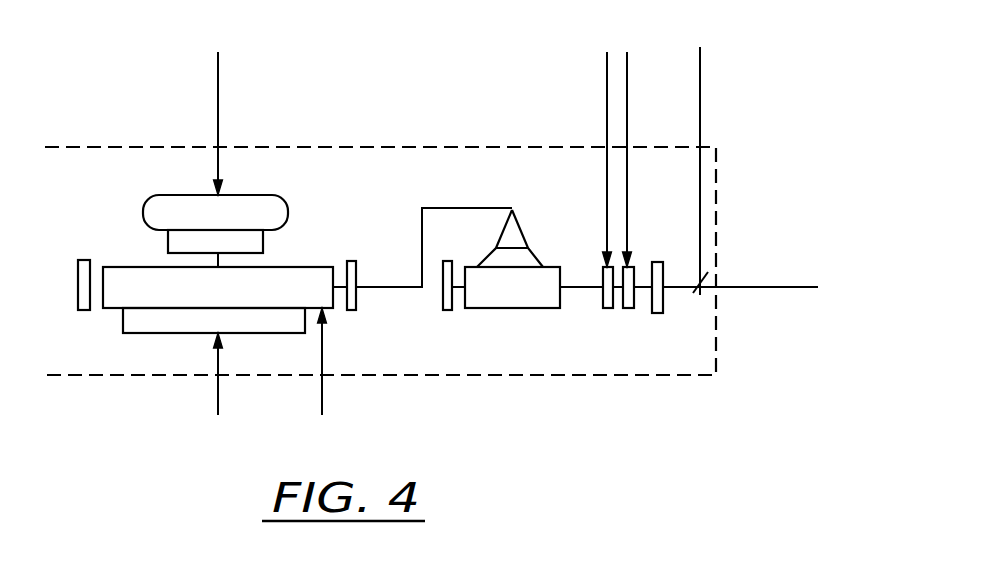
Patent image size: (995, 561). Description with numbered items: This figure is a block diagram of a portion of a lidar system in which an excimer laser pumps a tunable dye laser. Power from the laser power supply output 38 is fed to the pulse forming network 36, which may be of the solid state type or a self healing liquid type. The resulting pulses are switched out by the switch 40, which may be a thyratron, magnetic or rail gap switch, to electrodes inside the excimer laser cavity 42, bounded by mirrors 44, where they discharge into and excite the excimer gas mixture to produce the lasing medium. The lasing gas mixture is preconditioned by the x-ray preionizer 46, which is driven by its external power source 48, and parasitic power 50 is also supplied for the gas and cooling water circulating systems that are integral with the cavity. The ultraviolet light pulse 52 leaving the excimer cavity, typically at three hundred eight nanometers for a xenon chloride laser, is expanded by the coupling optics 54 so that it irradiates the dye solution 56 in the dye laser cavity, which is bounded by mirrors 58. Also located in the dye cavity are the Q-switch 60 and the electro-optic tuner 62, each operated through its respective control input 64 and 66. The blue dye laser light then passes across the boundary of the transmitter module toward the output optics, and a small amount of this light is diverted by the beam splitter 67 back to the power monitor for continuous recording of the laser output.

The pulse forming network 36 is at (232, 222).
The laser power supply output 38 is at (217, 110).
The switch 40 is at (263, 247).
The excimer laser cavity 42 is at (222, 300).
The mirrors 44 is at (78, 283).
The x-ray preionizer 46 is at (138, 333).
The external power source 48 is at (207, 391).
The parasitic power 50 is at (312, 376).
The uv light pulse 52 is at (404, 284).
The coupling optics 54 is at (520, 232).
The dye solution 56 is at (525, 299).
The mirrors 58 is at (447, 310).
The Q-switch 60 is at (628, 310).
The electro-optic tuner 62 is at (605, 310).
The control input 64 is at (596, 145).
The control input 66 is at (639, 145).
The beam splitter 67 is at (696, 300).